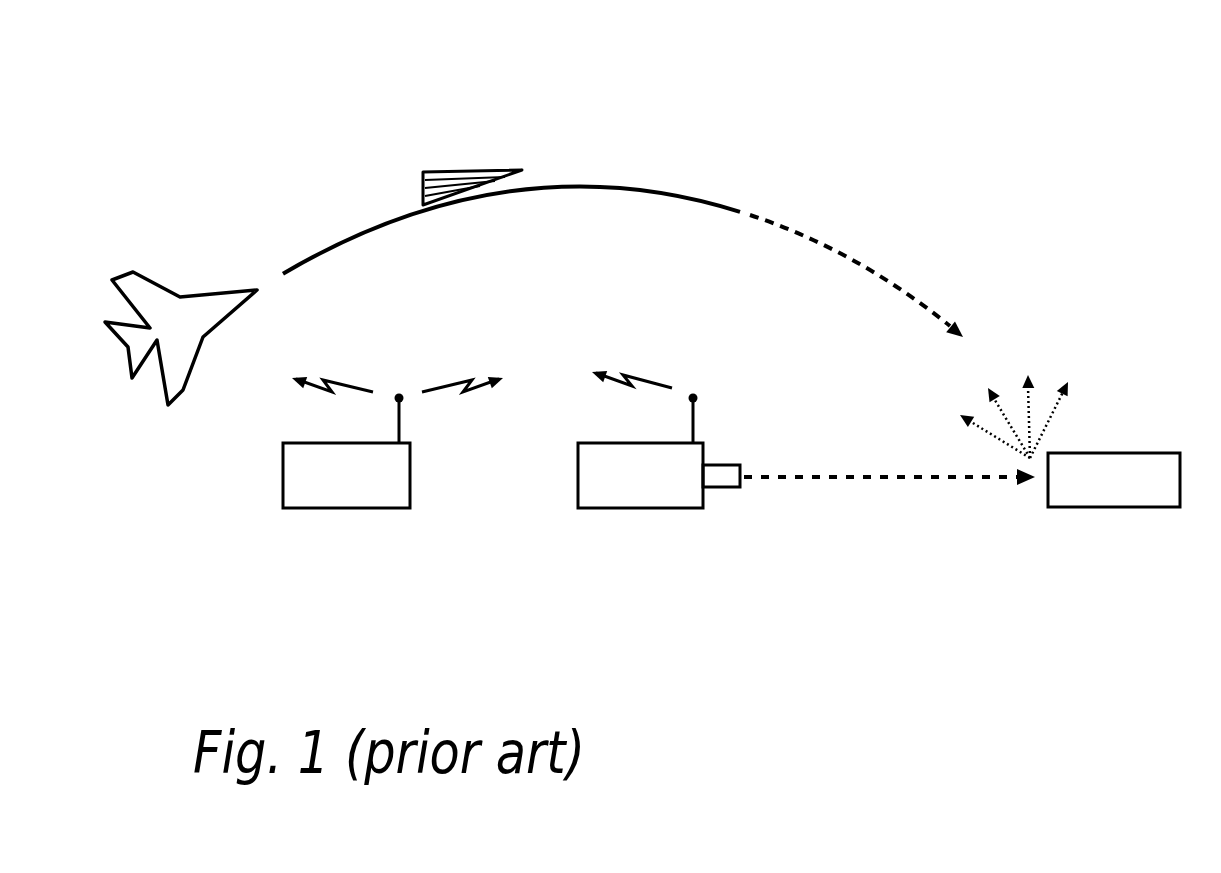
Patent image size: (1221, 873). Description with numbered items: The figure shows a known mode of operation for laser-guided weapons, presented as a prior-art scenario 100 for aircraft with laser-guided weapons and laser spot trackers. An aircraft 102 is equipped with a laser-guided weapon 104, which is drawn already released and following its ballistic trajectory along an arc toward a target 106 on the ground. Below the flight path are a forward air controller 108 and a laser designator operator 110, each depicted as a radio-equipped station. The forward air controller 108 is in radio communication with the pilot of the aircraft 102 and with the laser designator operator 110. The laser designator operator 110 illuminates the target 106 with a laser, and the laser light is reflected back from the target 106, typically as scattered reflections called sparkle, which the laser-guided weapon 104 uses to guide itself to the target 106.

The scenario 100 is at (340, 80).
The aircraft 102 is at (152, 277).
The laser-guided weapon (LGW) 104 is at (460, 172).
The target 106 is at (1062, 508).
The forward air controller (FAC) 108 is at (303, 508).
The laser designator operator (LDO) 110 is at (598, 508).